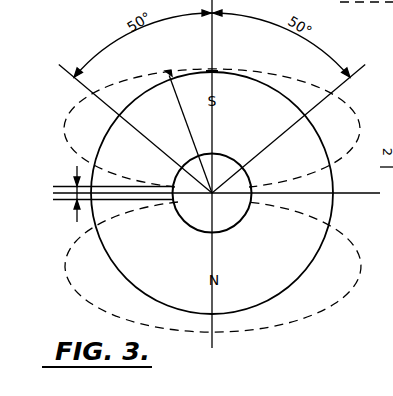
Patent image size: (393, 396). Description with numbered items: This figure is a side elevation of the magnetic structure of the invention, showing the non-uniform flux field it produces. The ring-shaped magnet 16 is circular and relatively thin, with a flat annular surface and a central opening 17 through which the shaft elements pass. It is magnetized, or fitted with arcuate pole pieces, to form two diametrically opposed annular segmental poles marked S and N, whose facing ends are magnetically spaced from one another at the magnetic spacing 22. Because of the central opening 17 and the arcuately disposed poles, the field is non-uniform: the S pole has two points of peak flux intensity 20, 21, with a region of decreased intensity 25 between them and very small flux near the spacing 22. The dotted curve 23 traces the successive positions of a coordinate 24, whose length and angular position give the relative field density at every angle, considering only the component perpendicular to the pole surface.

The ring-shaped magnet 16 is at (317, 209).
The central opening 17 is at (228, 212).
The point of peak flux intensity 20 is at (67, 75).
The point of peak flux intensity 21 is at (353, 72).
The magnetic spacing 22 is at (75, 182).
The dotted curve 23 is at (143, 70).
The coordinate 24 is at (183, 118).
The region of decreased intensity 25 is at (213, 70).